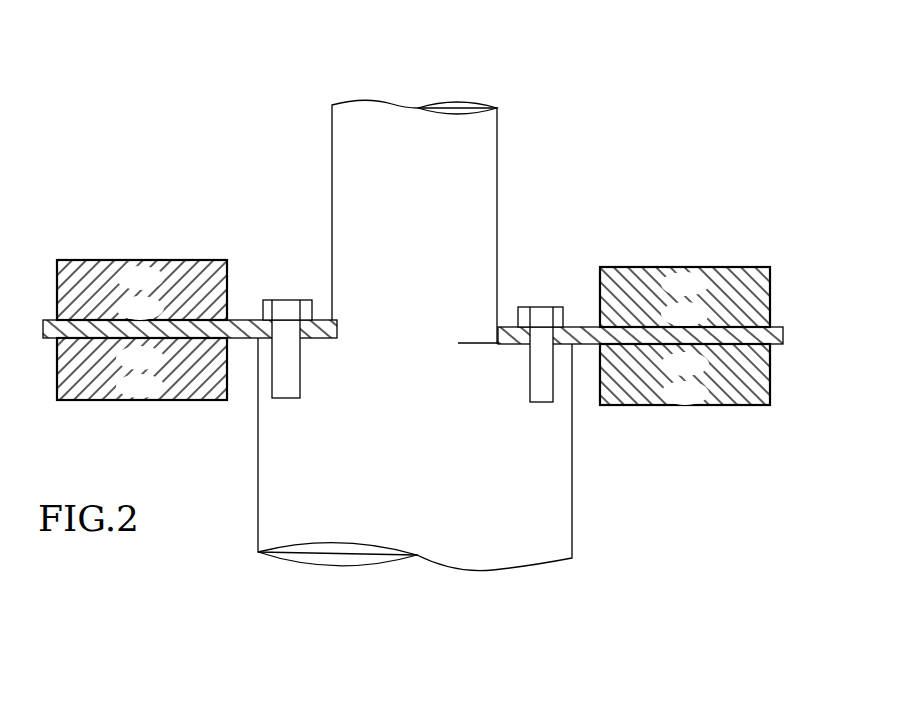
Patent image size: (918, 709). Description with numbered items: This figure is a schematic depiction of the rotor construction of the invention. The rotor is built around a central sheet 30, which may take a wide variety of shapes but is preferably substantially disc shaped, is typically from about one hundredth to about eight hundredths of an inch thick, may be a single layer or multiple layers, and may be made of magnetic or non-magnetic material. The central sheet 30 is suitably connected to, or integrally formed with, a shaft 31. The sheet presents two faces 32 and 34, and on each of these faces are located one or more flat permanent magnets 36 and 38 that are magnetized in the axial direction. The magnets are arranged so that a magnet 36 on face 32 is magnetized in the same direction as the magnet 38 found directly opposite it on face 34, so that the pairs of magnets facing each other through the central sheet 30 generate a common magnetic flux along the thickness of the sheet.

The central sheet 30 is at (243, 320).
The shaft 31 is at (462, 127).
The face 32 is at (586, 320).
The face 34 is at (581, 345).
The permanent magnet 36 is at (732, 268).
The permanent magnet 38 is at (729, 410).